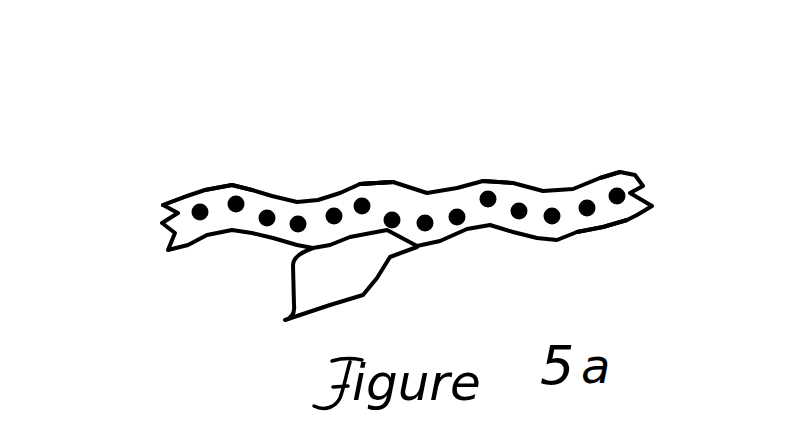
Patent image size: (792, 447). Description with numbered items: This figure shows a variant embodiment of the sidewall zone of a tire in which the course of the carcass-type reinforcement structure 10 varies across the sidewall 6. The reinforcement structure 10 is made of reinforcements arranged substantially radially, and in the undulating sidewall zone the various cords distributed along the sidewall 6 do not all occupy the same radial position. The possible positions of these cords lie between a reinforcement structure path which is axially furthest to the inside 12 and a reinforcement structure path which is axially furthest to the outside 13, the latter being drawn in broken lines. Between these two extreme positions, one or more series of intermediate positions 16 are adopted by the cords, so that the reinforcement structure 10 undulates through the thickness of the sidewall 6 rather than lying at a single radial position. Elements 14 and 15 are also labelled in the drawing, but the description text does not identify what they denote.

The sidewall 6 is at (598, 226).
The carcass-type reinforcement structure 10 is at (520, 205).
The axially innermost reinforcement structure path 12 is at (298, 225).
The axially outermost reinforcement structure path 13 is at (230, 201).
The bottom layer 14 is at (287, 320).
The top layer surface 15 is at (243, 187).
The intermediate positions 16 is at (262, 221).